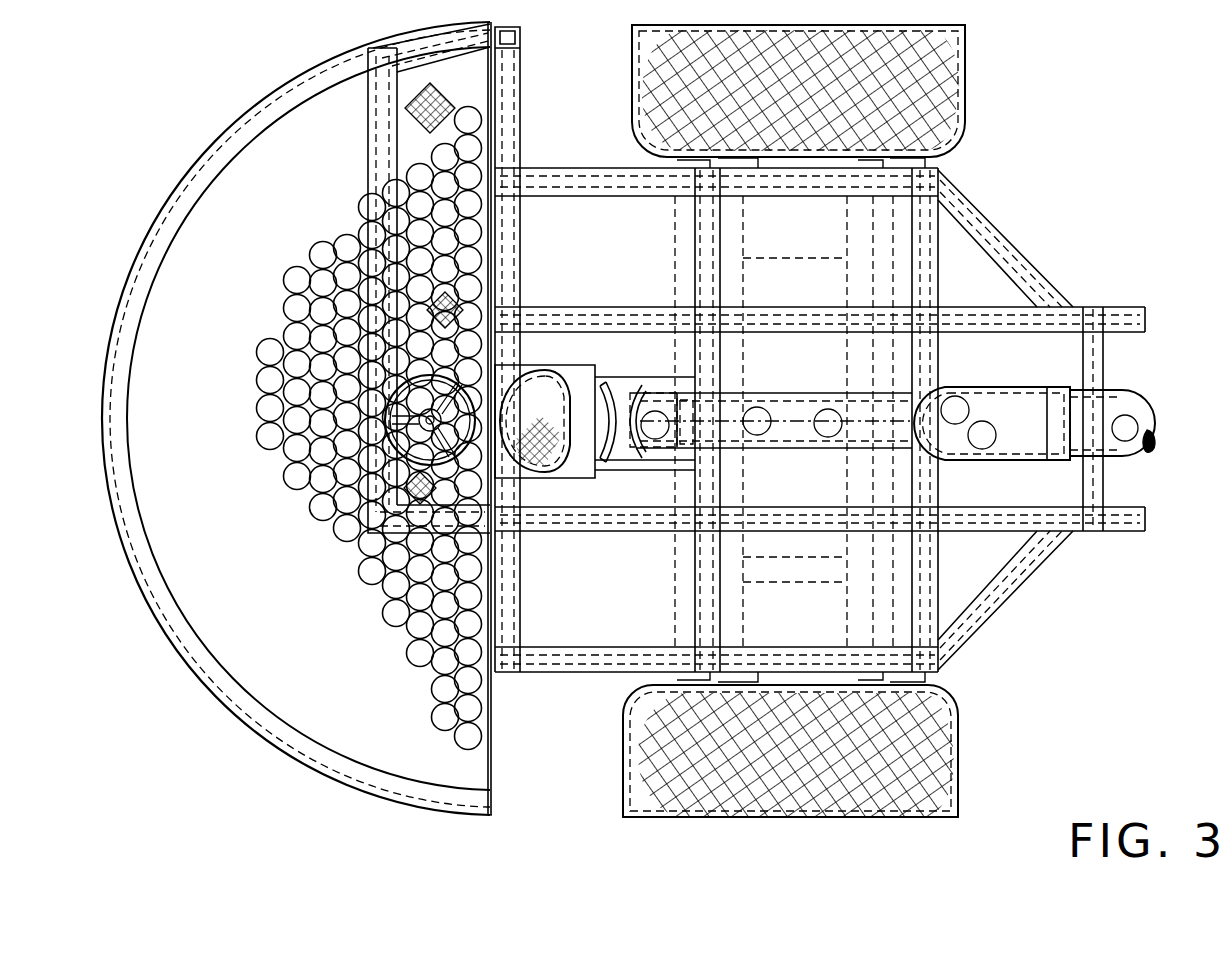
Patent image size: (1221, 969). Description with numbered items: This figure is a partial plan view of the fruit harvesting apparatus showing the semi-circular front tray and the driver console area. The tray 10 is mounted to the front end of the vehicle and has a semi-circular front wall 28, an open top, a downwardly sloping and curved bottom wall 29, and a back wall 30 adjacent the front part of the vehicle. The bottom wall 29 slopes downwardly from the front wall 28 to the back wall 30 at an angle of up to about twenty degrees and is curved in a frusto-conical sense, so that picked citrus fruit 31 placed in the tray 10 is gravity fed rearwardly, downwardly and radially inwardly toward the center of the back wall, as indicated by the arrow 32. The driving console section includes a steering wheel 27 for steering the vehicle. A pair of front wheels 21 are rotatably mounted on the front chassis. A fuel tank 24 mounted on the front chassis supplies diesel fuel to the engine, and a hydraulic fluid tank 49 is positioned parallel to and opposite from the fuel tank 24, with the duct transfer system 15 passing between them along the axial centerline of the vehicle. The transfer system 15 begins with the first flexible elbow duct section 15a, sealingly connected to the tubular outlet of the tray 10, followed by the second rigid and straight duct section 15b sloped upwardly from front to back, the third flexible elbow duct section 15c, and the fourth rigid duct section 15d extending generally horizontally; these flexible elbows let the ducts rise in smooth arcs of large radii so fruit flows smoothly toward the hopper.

The semi-circular tray 10 is at (234, 108).
The duct transfer system 15 is at (858, 466).
The first flexible elbow duct section 15a is at (655, 357).
The second rigid and straight duct section 15b is at (786, 420).
The third flexible elbow duct section 15c is at (1003, 410).
The fourth rigid duct section 15d is at (1131, 410).
The front wheels 21 is at (948, 78).
The fuel tank 24 is at (598, 238).
The steering wheel 27 is at (383, 445).
The semi-circular front wall 28 is at (168, 628).
The bottom wall 29 is at (272, 637).
The back wall 30 is at (480, 768).
The citrus fruit 31 is at (262, 455).
The arrow 32 is at (318, 272).
The hydraulic fluid tank 49 is at (600, 625).